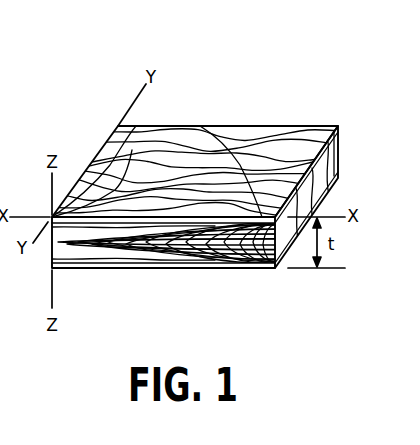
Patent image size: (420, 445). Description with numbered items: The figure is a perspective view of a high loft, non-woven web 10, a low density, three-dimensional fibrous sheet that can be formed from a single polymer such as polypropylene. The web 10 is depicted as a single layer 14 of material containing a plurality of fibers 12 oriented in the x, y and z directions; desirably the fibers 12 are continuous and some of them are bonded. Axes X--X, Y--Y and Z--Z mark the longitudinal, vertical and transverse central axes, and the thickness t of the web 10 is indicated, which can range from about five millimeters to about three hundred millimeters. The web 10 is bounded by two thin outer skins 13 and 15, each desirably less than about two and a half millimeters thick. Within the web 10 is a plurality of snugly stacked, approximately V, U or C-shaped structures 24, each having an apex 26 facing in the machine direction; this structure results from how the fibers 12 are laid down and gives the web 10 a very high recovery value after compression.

The high loft, non-woven web 10 is at (313, 70).
The fibers 12 is at (322, 152).
The thin outer skin 13 is at (340, 127).
The single layer 14 is at (341, 158).
The thin outer skin 15 is at (340, 178).
The V, U or C-shaped structures 24 is at (112, 250).
The apex 26 is at (143, 248).